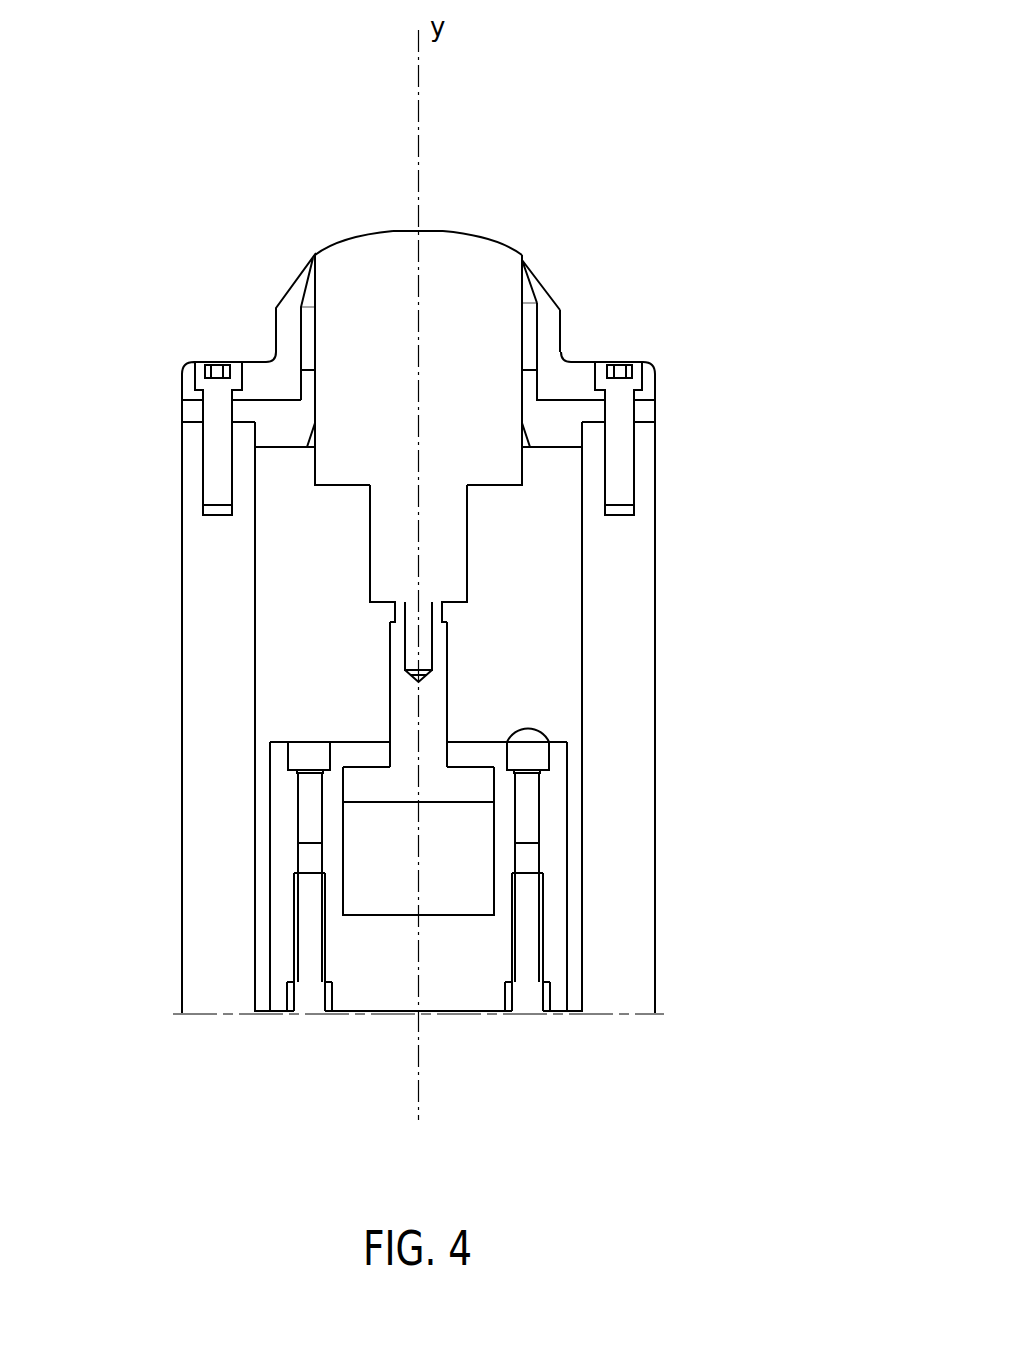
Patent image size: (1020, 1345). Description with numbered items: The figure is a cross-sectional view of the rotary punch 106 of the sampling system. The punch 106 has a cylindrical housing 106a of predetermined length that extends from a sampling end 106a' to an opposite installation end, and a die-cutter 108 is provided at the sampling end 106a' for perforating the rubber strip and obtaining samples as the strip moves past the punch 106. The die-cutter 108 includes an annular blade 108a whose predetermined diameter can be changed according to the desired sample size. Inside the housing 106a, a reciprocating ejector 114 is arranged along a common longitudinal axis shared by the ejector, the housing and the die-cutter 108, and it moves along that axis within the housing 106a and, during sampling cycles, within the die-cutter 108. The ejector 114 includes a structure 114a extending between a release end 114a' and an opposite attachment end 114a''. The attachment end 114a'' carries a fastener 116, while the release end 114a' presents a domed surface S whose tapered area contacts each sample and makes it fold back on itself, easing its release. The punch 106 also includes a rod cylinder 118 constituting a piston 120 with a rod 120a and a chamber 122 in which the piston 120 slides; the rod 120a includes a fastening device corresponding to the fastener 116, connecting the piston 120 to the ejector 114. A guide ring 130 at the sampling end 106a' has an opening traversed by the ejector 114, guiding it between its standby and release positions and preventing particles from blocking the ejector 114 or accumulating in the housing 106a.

The rotary punch 106 is at (150, 162).
The cylindrical housing 106a is at (490, 718).
The sampling end 106a' is at (492, 433).
The die-cutter 108 is at (556, 325).
The annular blade 108a is at (532, 275).
The reciprocating ejector 114 is at (332, 326).
The structure 114a is at (331, 407).
The release end 114a' is at (315, 189).
The attachment end 114a'' is at (281, 553).
The fastener 116 is at (412, 620).
The rod cylinder 118 is at (285, 840).
The piston 120 is at (458, 788).
The rod 120a is at (430, 722).
The chamber 122 is at (470, 940).
The guide ring 130 is at (590, 412).
The domed surface S is at (444, 230).